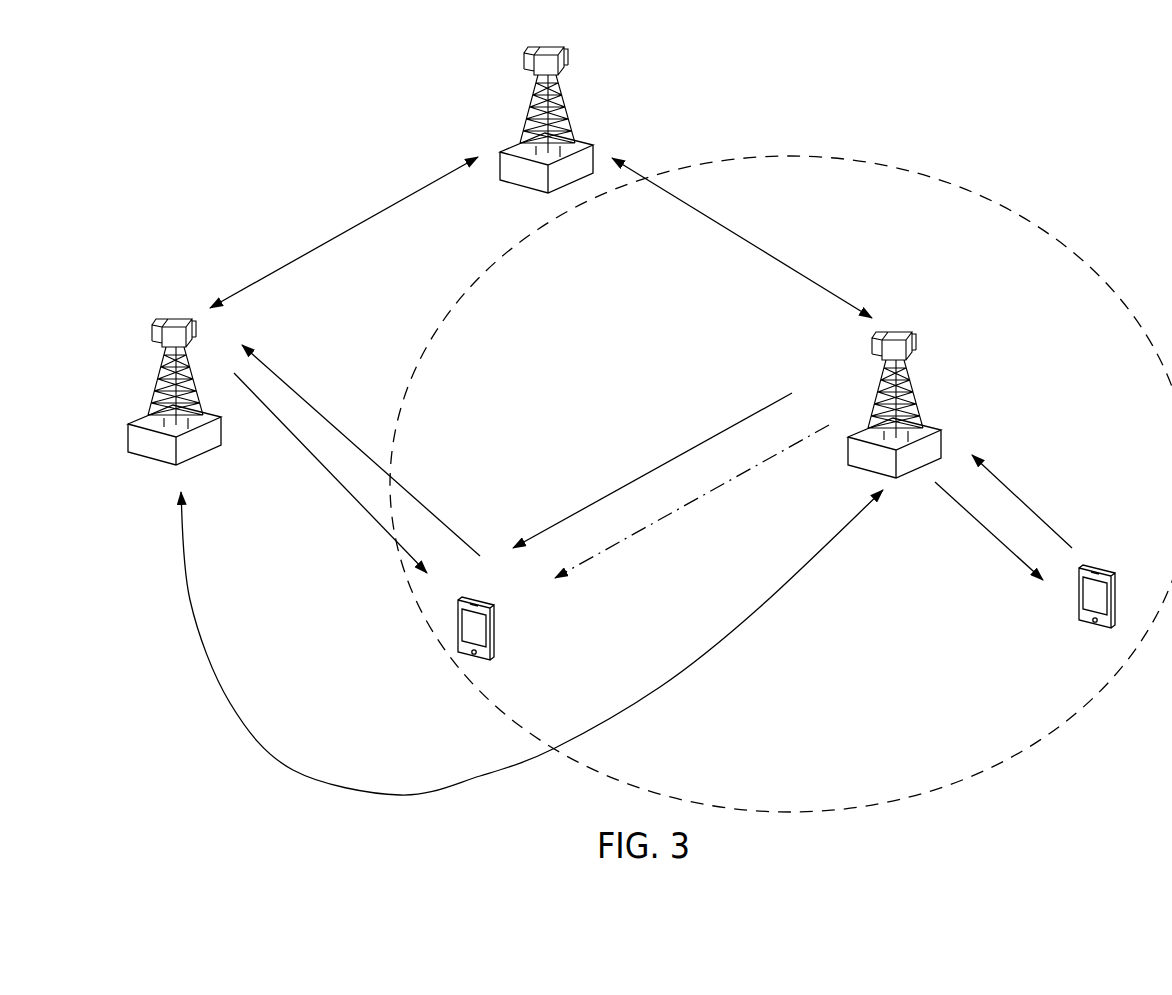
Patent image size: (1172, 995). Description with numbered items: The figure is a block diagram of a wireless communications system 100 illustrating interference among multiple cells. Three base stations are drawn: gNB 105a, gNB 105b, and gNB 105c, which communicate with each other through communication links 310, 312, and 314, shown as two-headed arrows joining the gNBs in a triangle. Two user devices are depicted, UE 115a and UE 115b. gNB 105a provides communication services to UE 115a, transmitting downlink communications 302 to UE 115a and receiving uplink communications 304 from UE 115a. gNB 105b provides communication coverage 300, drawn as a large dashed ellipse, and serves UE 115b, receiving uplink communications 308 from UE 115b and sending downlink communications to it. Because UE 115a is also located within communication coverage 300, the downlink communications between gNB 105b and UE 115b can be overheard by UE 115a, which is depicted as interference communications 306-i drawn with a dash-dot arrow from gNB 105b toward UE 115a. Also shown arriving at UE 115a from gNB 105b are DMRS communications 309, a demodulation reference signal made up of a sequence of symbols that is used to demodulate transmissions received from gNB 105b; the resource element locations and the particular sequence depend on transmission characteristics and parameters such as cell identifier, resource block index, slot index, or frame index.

The wireless communications system 100 is at (645, 127).
The communication coverage 300 is at (487, 266).
The gNB 105a is at (160, 468).
The gNB 105b is at (872, 477).
The gNB 105c is at (592, 141).
The UE 115a is at (494, 622).
The UE 115b is at (1117, 592).
The downlink communications 302 is at (322, 474).
The uplink communications 304 is at (316, 416).
The interference communications 306-i is at (664, 511).
The uplink communications 308 is at (992, 474).
The DMRS communications 309 is at (655, 468).
The communication link 310 is at (292, 768).
The communication link 312 is at (728, 230).
The communication link 314 is at (343, 233).